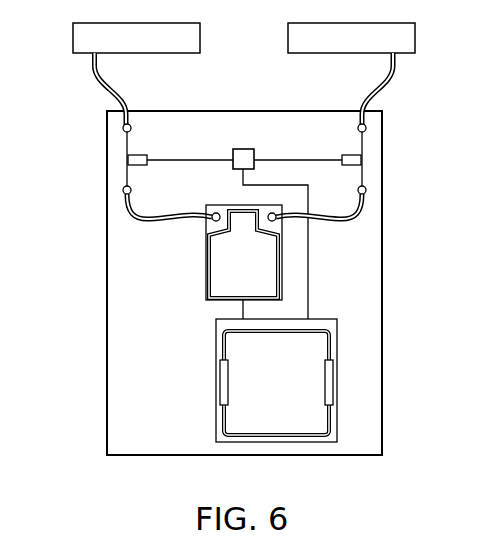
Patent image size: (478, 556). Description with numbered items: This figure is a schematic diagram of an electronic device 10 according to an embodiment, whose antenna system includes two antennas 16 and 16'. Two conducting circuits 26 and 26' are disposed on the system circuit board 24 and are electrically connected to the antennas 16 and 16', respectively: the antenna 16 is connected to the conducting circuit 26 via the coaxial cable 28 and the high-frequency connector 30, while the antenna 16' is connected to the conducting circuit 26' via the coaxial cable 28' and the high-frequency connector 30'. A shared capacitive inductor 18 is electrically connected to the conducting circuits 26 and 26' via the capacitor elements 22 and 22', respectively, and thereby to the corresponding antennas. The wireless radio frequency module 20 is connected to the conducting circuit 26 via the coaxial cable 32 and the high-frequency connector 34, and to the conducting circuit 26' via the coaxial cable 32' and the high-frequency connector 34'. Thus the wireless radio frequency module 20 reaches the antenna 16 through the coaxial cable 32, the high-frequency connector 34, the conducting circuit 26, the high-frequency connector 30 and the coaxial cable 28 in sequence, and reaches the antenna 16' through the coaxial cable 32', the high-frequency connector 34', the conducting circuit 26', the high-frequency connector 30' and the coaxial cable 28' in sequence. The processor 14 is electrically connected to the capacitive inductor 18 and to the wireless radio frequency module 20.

The electronic device 10 is at (246, 253).
The processor 14 is at (334, 352).
The antenna 16 is at (114, 38).
The antenna 16' is at (378, 38).
The capacitive inductor 18 is at (243, 148).
The wireless radio frequency module 20 is at (283, 266).
The capacitor element 22 is at (147, 168).
The capacitor element 22' is at (345, 168).
The system circuit board 24 is at (376, 305).
The conducting circuit 26 is at (94, 159).
The conducting circuit 26' is at (399, 159).
The coaxial cable 28 is at (210, 89).
The coaxial cable 28' is at (415, 89).
The high-frequency connector 30 is at (96, 125).
The high-frequency connector 30' is at (397, 125).
The coaxial cable 32 is at (140, 214).
The coaxial cable 32' is at (352, 213).
The high-frequency connector 34 is at (96, 195).
The high-frequency connector 34' is at (397, 193).